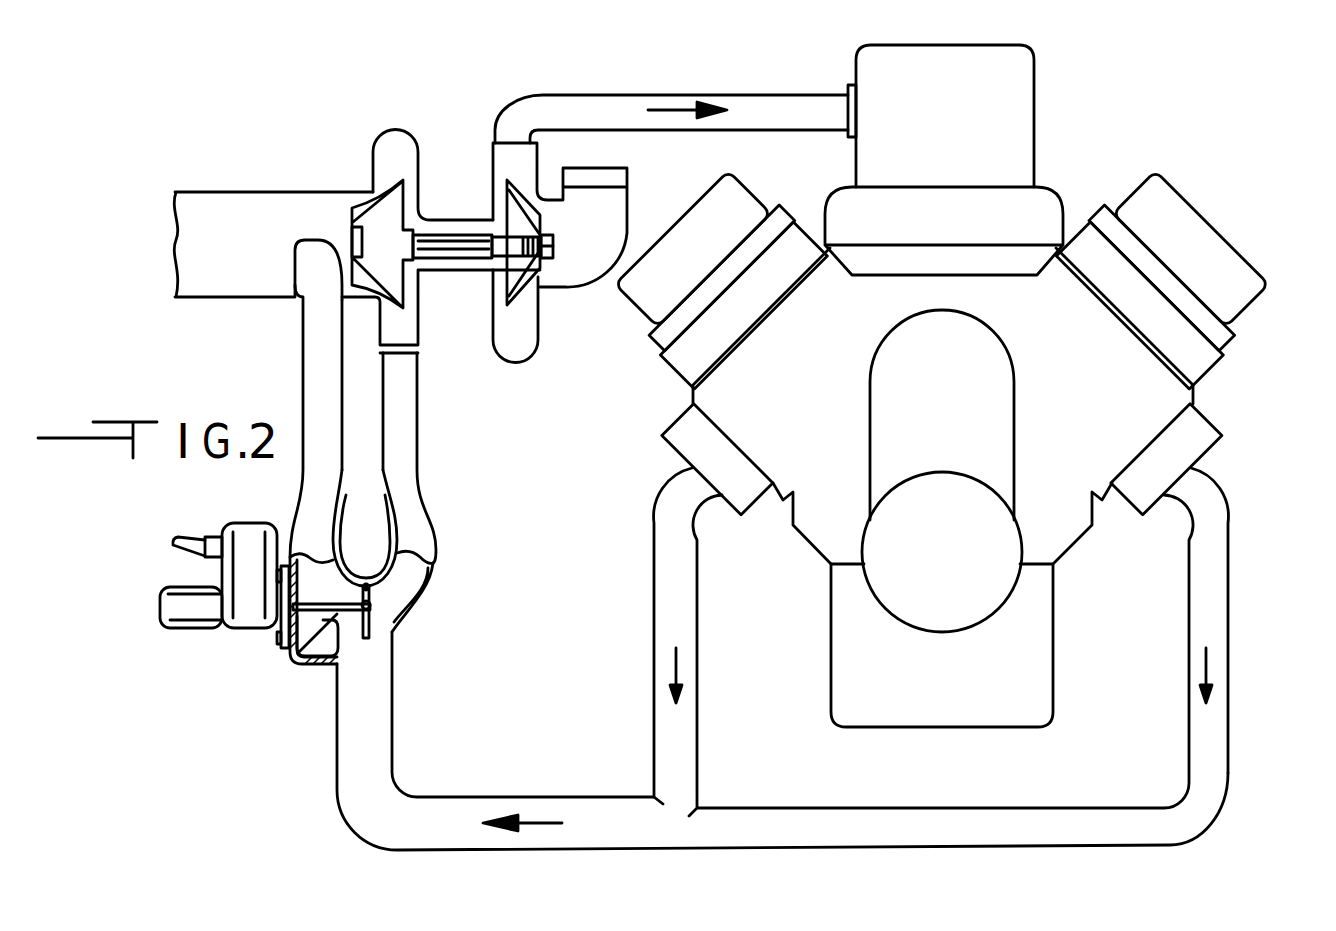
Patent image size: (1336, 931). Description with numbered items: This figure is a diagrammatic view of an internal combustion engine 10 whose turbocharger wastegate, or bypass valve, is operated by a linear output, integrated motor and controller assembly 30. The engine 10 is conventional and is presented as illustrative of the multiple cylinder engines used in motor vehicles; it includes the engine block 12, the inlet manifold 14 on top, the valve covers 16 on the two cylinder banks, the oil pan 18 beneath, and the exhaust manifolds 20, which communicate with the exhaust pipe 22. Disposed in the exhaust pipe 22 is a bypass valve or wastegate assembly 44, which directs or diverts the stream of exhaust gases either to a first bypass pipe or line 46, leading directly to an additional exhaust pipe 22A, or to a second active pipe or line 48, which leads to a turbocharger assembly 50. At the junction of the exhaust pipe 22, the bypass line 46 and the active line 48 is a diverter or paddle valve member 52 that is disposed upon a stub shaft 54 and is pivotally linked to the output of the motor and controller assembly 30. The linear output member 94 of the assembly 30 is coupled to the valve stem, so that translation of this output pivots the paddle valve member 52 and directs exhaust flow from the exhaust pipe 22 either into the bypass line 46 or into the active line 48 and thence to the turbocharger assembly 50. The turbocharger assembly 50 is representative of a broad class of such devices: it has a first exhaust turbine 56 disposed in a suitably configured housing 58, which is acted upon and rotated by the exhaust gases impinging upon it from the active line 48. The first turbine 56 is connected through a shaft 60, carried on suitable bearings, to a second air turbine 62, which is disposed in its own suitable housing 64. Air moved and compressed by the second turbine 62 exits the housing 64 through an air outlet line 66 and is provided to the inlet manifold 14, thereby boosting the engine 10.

The internal combustion engine 10 is at (1103, 117).
The engine block 12 is at (1090, 396).
The inlet manifold 14 is at (1043, 213).
The valve covers 16 is at (1228, 270).
The oil pan 18 is at (1038, 653).
The exhaust manifolds 20 is at (654, 625).
The exhaust pipe 22 is at (957, 837).
The additional exhaust pipe 22A is at (205, 200).
The linear output, integrated motor and controller assembly 30 is at (245, 652).
The bypass valve or wastegate assembly 44 is at (410, 637).
The first bypass pipe or line 46 is at (303, 507).
The second active pipe or line 48 is at (420, 510).
The turbocharger assembly 50 is at (470, 196).
The diverter or paddle valve member 52 is at (413, 610).
The stub shaft 54 is at (366, 566).
The first (exhaust) turbine 56 is at (373, 222).
The housing 58 is at (418, 140).
The shaft 60 is at (462, 256).
The second (air) turbine 62 is at (540, 280).
The housing 64 is at (493, 163).
The air outlet line 66 is at (617, 92).
The linear output member 94 is at (305, 665).